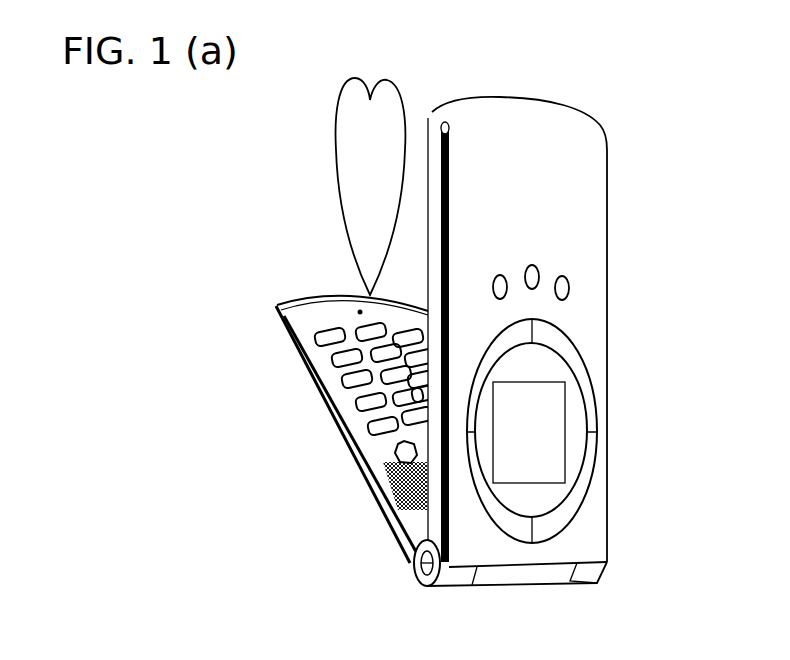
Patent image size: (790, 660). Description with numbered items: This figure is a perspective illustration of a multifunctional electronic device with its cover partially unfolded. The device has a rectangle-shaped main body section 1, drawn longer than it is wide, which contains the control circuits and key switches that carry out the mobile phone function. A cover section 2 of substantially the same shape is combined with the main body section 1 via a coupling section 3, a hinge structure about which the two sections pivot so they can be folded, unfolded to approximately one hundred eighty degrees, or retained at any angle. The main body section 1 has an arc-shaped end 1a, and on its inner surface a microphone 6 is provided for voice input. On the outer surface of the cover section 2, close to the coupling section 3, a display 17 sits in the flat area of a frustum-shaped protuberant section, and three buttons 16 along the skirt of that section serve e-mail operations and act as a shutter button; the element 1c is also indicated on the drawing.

The main body section 1 is at (337, 384).
The arc-shaped end 1a is at (298, 297).
The three-dimensional image (heart) 1c is at (403, 110).
The cover section 2 is at (590, 225).
The coupling section 3 is at (414, 564).
The microphone 6 is at (366, 297).
The three buttons 16 is at (538, 270).
The display 17 is at (553, 427).